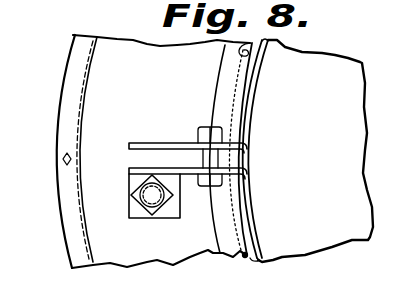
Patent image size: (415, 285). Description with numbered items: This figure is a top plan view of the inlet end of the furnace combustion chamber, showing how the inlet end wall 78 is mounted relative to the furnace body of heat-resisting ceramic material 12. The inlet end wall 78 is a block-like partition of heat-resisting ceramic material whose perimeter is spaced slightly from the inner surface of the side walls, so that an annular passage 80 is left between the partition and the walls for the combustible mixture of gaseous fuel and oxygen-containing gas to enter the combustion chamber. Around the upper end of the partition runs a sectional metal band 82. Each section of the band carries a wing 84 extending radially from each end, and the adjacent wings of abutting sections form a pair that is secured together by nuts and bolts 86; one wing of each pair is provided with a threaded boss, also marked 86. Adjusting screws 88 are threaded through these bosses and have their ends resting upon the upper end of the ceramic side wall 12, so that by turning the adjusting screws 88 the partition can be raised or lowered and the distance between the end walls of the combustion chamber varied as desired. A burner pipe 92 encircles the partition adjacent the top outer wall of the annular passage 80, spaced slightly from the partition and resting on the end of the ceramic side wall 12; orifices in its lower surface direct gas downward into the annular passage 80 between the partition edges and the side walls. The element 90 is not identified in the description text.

The heat-resisting ceramic material 12 is at (155, 247).
The inlet end wall 78 is at (348, 230).
The annular passage 80 is at (248, 259).
The sectional metal band 82 is at (251, 97).
The wing 84 is at (128, 143).
The nuts and bolts 86 is at (200, 127).
The adjusting screws 88 is at (132, 181).
The plate 90 is at (152, 196).
The burner pipe 92 is at (226, 229).